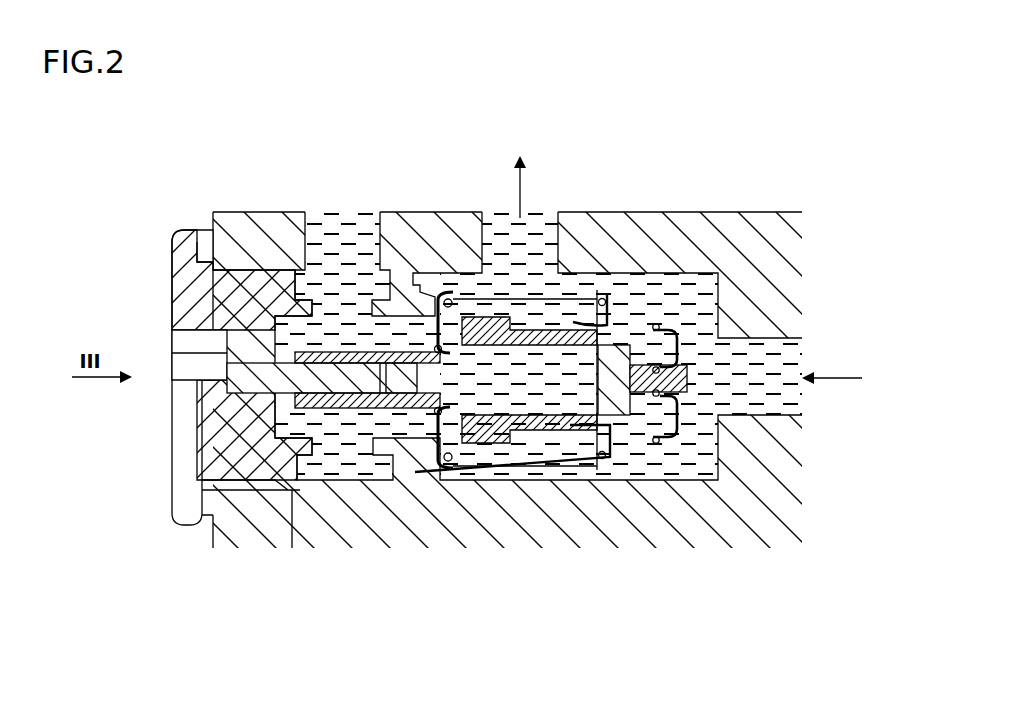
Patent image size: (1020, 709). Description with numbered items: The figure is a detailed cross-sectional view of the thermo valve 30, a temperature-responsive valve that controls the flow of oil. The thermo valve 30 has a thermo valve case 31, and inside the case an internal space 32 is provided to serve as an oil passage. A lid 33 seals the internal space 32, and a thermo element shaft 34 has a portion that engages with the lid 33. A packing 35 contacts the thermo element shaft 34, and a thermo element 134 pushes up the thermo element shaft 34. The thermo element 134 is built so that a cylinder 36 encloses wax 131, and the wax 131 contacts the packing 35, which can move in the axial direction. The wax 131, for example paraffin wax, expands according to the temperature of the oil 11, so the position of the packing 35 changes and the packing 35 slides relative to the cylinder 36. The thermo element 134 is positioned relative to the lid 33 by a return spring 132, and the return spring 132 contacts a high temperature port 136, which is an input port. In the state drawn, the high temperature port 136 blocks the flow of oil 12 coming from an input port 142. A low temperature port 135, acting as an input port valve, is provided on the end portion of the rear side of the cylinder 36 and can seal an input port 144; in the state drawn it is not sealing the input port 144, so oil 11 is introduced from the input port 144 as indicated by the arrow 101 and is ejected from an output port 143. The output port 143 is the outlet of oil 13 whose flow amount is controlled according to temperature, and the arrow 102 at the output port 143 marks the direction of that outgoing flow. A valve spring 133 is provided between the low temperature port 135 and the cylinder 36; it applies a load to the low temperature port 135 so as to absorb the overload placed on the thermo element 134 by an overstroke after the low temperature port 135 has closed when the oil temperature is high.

The thermo valve 30 is at (740, 146).
The thermo valve case 31 is at (660, 218).
The internal space 32 is at (705, 297).
The lid 33 is at (198, 296).
The thermo element shaft 34 is at (291, 491).
The packing 35 is at (400, 383).
The cylinder 36 is at (553, 327).
The oil 11 is at (792, 352).
The oil 12 is at (355, 217).
The oil 13 is at (508, 217).
The arrow 101 is at (848, 376).
The outflow direction 102 is at (522, 193).
The wax 131 is at (550, 397).
The return spring 132 is at (492, 450).
The valve spring 133 is at (643, 413).
The thermo element 134 is at (603, 492).
The low temperature port 135 is at (677, 412).
The high temperature port 136 is at (418, 272).
The input port 142 is at (312, 217).
The output port 143 is at (493, 217).
The input port 144 is at (770, 413).